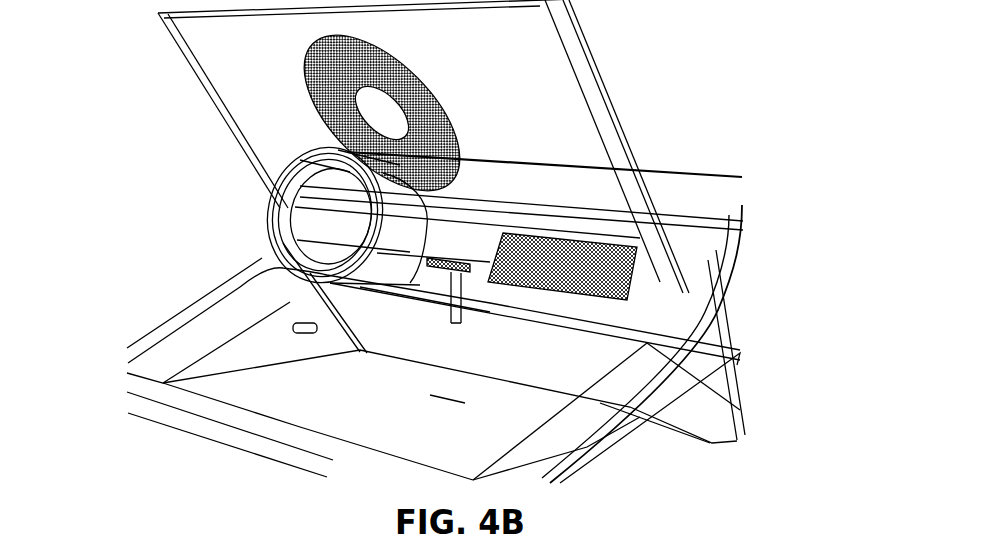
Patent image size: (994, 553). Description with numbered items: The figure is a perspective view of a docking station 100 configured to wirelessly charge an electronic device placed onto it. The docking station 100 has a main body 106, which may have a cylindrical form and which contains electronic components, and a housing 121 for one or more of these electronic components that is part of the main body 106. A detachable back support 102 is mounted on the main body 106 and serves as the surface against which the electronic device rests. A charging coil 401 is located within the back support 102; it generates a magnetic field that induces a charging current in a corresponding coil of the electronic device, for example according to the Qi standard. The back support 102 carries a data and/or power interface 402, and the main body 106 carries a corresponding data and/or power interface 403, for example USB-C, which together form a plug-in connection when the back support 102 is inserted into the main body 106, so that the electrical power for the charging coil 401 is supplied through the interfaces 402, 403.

The docking station 100 is at (128, 40).
The back support 102 is at (240, 164).
The main body 106 is at (708, 294).
The housing 121 is at (588, 392).
The charging coil 401 is at (326, 89).
The data and/or power interface 402 is at (447, 237).
The data and/or power interface 403 is at (447, 267).